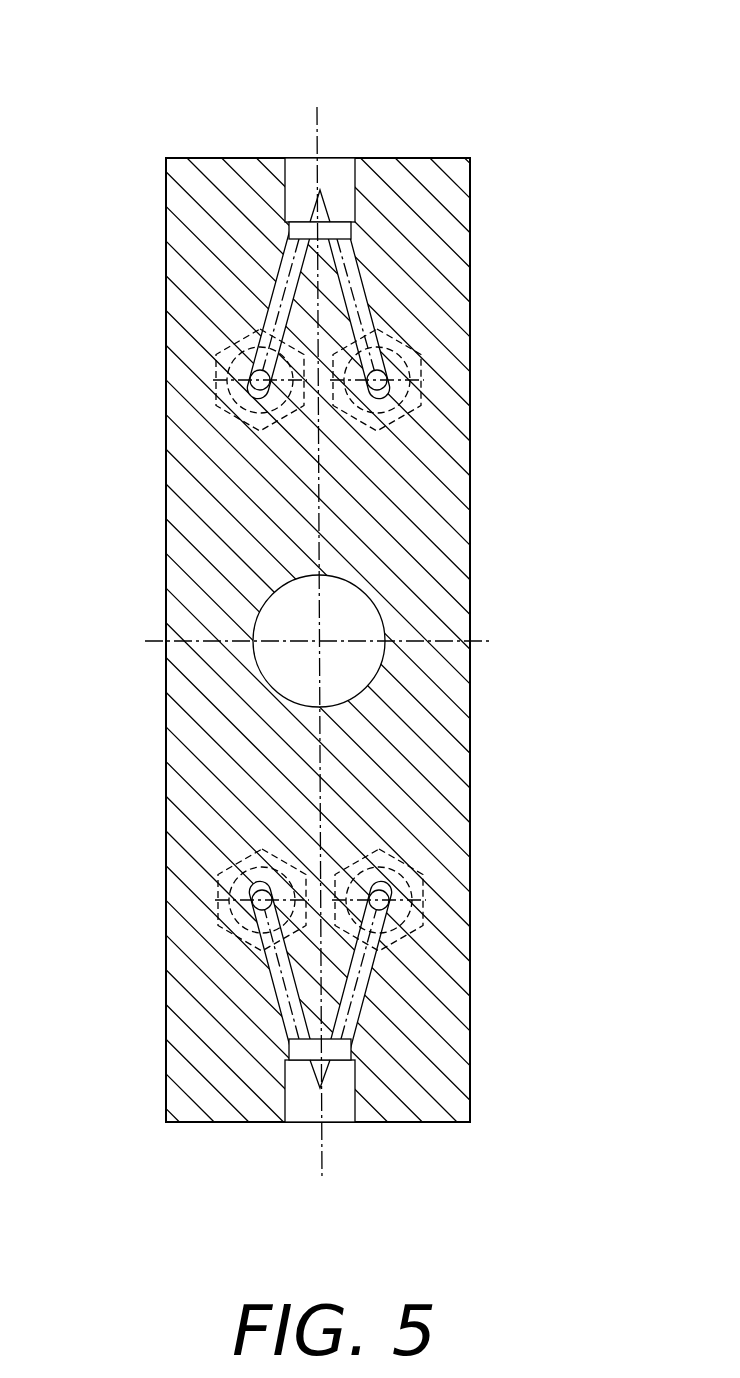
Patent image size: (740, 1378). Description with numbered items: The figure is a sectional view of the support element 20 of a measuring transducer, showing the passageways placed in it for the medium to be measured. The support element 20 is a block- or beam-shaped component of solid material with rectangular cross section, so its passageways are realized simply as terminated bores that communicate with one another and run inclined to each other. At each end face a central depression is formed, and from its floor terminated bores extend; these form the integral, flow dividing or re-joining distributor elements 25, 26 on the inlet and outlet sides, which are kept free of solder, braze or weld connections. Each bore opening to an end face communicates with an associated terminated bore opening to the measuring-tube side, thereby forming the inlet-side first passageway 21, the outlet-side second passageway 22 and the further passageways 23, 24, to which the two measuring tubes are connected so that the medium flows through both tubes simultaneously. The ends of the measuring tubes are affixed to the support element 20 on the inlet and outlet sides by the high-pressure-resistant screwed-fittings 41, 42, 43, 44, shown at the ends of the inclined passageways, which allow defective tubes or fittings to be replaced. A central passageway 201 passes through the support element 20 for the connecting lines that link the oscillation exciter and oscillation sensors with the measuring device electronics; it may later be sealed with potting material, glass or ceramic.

The support element 20 is at (447, 198).
The passageway 201 is at (365, 620).
The first passageway 21 is at (365, 984).
The second passageway 22 is at (362, 300).
The passageway 23 is at (280, 984).
The passageway 24 is at (287, 302).
The distributor element 25 is at (334, 1140).
The distributor element 26 is at (330, 145).
The first screwed-fitting 41 is at (415, 898).
The second screwed-fitting 42 is at (410, 388).
The screwed-fitting 43 is at (225, 898).
The screwed-fitting 44 is at (228, 384).